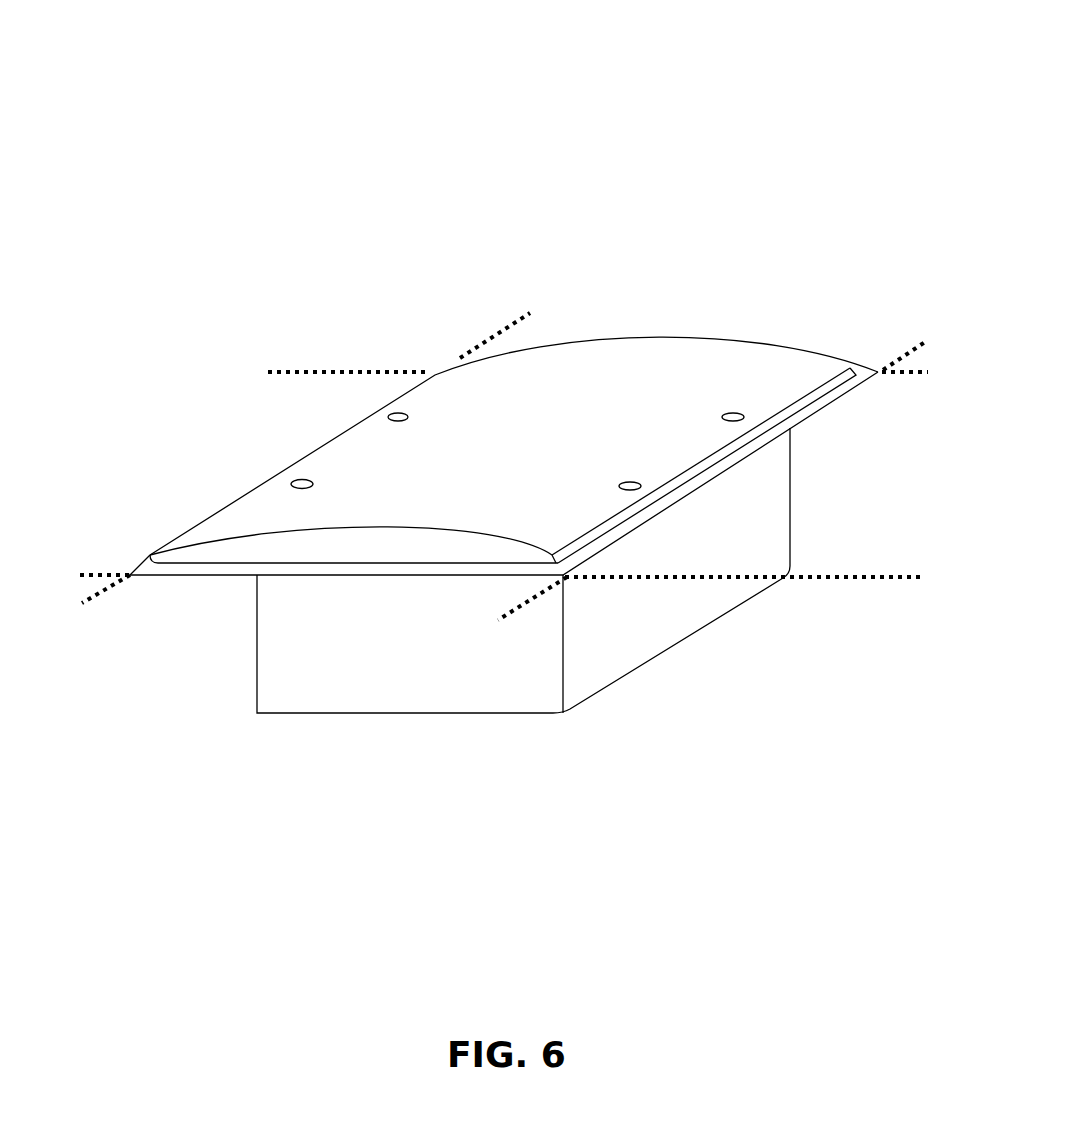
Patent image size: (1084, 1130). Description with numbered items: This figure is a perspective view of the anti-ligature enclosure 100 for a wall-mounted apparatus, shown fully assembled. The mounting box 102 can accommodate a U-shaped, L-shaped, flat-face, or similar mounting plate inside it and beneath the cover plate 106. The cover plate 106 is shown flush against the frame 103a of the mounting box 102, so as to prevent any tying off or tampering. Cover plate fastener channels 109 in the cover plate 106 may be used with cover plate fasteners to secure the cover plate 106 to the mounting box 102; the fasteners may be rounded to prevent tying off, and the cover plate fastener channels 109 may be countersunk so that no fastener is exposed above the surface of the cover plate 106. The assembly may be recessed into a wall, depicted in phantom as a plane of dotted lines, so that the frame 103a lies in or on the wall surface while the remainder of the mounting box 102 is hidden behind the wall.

The anti-ligature enclosure 100 is at (697, 92).
The mounting box 102 is at (258, 633).
The frame 103a is at (853, 383).
The cover plate 106 is at (600, 340).
The cover plate fastener channels 109 is at (295, 482).